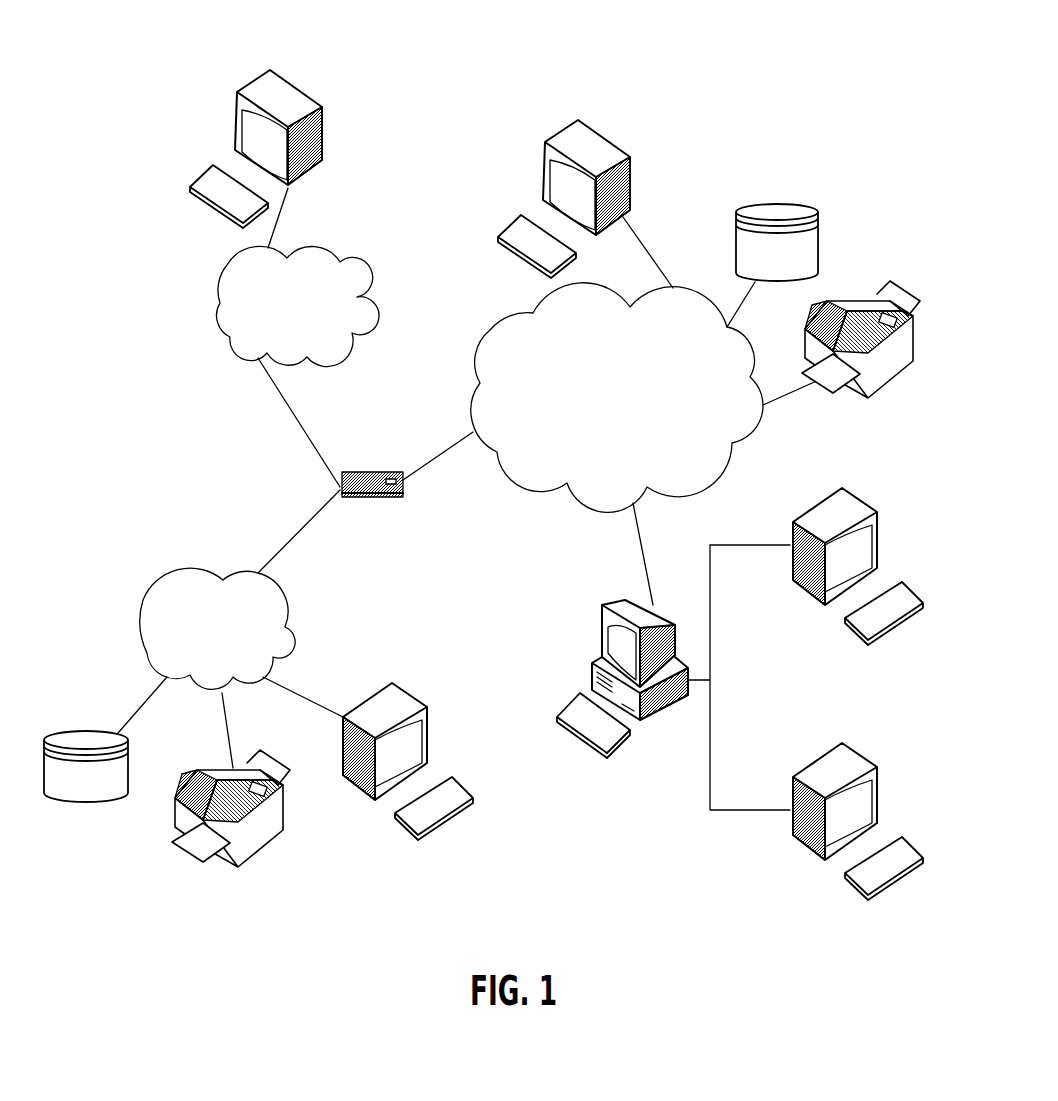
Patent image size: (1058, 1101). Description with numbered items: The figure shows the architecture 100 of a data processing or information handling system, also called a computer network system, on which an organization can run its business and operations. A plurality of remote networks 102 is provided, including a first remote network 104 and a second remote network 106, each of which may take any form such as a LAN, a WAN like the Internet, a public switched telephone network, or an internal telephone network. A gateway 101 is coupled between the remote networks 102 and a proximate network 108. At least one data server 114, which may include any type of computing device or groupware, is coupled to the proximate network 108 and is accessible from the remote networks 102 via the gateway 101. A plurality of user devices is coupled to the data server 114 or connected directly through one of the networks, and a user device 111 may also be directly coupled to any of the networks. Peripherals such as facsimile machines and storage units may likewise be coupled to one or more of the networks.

The architecture 100 is at (172, 50).
The gateway 101 is at (353, 472).
The remote networks 102 is at (195, 374).
The first remote network 104 is at (143, 598).
The second remote network 106 is at (360, 276).
The proximate network 108 is at (723, 472).
The user device 111 is at (632, 157).
The data server 114 is at (602, 625).